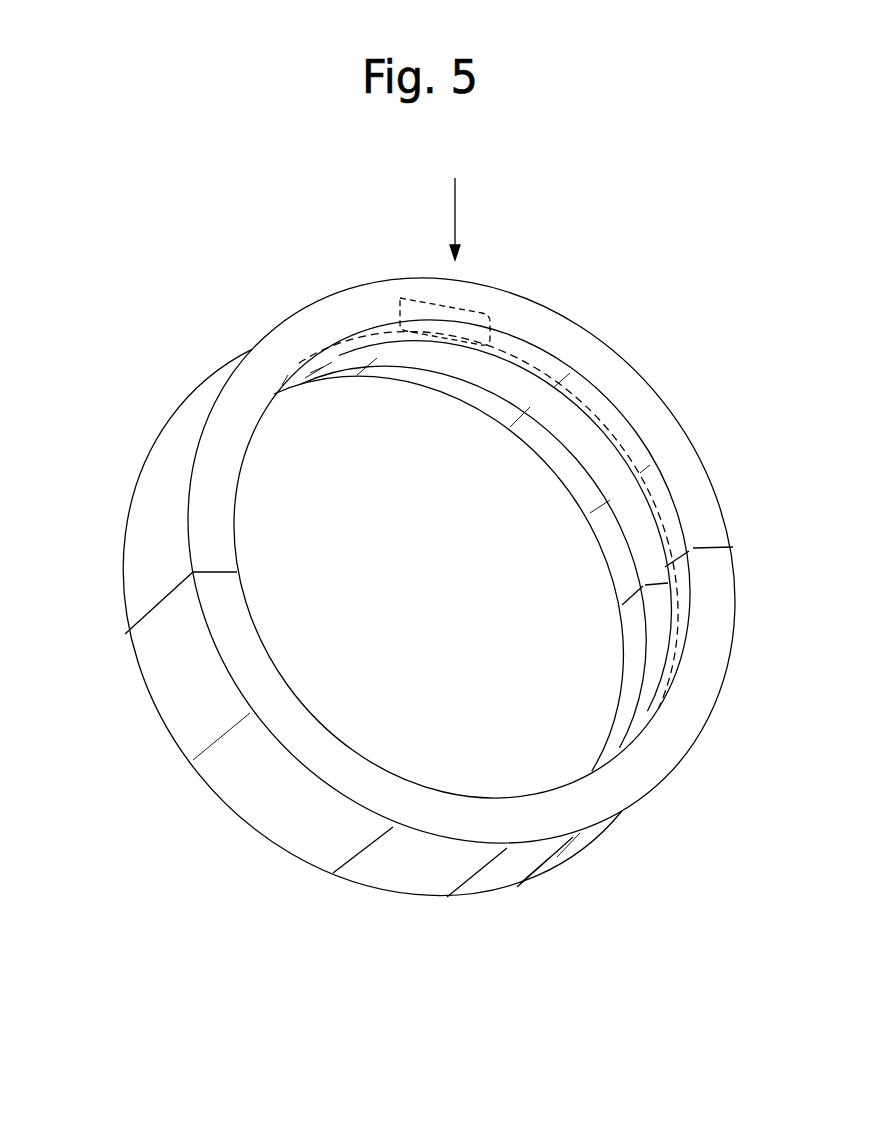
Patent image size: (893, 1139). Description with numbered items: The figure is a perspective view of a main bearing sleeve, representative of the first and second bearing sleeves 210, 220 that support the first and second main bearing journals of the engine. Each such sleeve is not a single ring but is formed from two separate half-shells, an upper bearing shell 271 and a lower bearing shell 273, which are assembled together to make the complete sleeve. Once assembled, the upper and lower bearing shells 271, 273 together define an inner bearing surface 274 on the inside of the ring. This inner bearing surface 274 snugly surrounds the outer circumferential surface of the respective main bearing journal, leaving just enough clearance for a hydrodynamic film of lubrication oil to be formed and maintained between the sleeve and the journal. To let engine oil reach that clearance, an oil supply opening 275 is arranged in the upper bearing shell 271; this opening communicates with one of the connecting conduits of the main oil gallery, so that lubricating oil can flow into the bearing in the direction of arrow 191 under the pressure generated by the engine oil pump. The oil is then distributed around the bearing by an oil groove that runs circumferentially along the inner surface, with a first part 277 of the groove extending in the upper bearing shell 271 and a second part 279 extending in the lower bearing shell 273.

The arrow 191 is at (458, 216).
The first bearing sleeve 210 is at (429, 592).
The second bearing sleeve 220 is at (197, 823).
The upper bearing shell 271 is at (163, 481).
The lower bearing shell 273 is at (425, 878).
The inner bearing surface 274 is at (322, 358).
The oil supply opening 275 is at (440, 299).
The first part of oil groove 277 is at (584, 434).
The second part of oil groove 279 is at (657, 633).